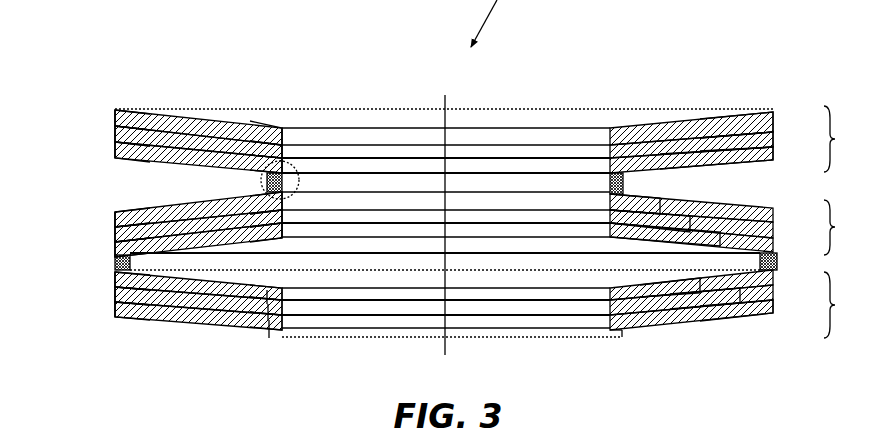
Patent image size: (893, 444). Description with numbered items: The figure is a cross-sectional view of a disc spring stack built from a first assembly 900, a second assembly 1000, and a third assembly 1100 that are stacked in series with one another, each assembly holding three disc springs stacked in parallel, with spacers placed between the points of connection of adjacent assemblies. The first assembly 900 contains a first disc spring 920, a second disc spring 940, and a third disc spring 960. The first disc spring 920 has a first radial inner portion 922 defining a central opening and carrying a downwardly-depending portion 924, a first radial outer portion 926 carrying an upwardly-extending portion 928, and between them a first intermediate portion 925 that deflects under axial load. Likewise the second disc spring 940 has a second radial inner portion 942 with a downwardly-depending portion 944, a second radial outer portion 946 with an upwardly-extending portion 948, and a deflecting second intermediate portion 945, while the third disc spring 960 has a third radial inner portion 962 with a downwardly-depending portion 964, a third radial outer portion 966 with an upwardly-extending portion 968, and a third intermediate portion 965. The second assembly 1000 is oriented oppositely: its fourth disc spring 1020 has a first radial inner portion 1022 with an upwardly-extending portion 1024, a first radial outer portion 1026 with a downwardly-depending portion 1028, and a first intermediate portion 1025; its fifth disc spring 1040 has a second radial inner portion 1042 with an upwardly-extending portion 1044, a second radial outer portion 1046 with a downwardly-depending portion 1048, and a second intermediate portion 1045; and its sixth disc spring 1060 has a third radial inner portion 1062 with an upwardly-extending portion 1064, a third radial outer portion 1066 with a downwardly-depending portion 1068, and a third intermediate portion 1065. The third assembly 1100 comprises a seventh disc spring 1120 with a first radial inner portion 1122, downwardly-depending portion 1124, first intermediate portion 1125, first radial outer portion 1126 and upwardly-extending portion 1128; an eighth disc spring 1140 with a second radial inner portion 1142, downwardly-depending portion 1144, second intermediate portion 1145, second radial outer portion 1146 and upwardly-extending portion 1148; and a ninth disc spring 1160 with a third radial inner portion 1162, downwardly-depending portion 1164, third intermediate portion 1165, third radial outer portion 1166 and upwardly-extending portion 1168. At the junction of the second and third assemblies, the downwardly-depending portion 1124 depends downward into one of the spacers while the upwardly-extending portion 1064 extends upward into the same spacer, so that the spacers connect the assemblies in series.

The first assembly 900 is at (452, 326).
The first disc spring 920 is at (776, 312).
The first radial inner portion 922 is at (281, 331).
The downwardly-depending portion 924 is at (270, 338).
The first intermediate portion 925 is at (737, 317).
The first radial outer portion 926 is at (123, 312).
The upwardly-extending portion 928 is at (117, 304).
The second disc spring 940 is at (776, 297).
The second radial inner portion 942 is at (283, 315).
The downwardly-depending portion 944 is at (270, 321).
The second intermediate portion 945 is at (703, 302).
The second radial outer portion 946 is at (130, 297).
The upwardly-extending portion 948 is at (117, 290).
The third disc spring 960 is at (776, 282).
The third radial inner portion 962 is at (283, 297).
The downwardly-depending portion 964 is at (268, 305).
The third intermediate portion 965 is at (675, 292).
The third radial outer portion 966 is at (132, 280).
The upwardly-extending portion 968 is at (117, 277).
The second assembly 1000 is at (457, 162).
The fourth disc spring 1020 is at (776, 249).
The first radial inner portion 1022 is at (272, 237).
The upwardly-extending portion 1024 is at (284, 229).
The first intermediate portion 1025 is at (692, 240).
The first radial outer portion 1026 is at (128, 248).
The downwardly-depending portion 1028 is at (117, 252).
The fifth disc spring 1040 is at (776, 234).
The second radial inner portion 1042 is at (270, 218).
The upwardly-extending portion 1044 is at (284, 214).
The second intermediate portion 1045 is at (662, 220).
The second radial outer portion 1046 is at (127, 232).
The downwardly-depending portion 1048 is at (117, 238).
The sixth disc spring 1060 is at (776, 219).
The third radial inner portion 1062 is at (268, 204).
The upwardly-extending portion 1064 is at (284, 200).
The third intermediate portion 1065 is at (638, 201).
The third radial outer portion 1066 is at (116, 211).
The downwardly-depending portion 1068 is at (117, 223).
The third assembly 1100 is at (459, 107).
The seventh disc spring 1120 is at (776, 157).
The first radial inner portion 1122 is at (268, 166).
The downwardly-depending portion 1124 is at (284, 171).
The first intermediate portion 1125 is at (680, 158).
The first radial outer portion 1126 is at (128, 154).
The upwardly-extending portion 1128 is at (117, 146).
The eighth disc spring 1140 is at (776, 142).
The second radial inner portion 1142 is at (270, 151).
The downwardly-depending portion 1144 is at (284, 158).
The second intermediate portion 1145 is at (708, 143).
The second radial outer portion 1146 is at (128, 137).
The upwardly-extending portion 1148 is at (117, 132).
The ninth disc spring 1160 is at (776, 127).
The third radial inner portion 1162 is at (277, 134).
The downwardly-depending portion 1164 is at (284, 142).
The third intermediate portion 1165 is at (732, 127).
The third radial outer portion 1166 is at (128, 119).
The upwardly-extending portion 1168 is at (117, 112).
The element spacers is at (266, 184).